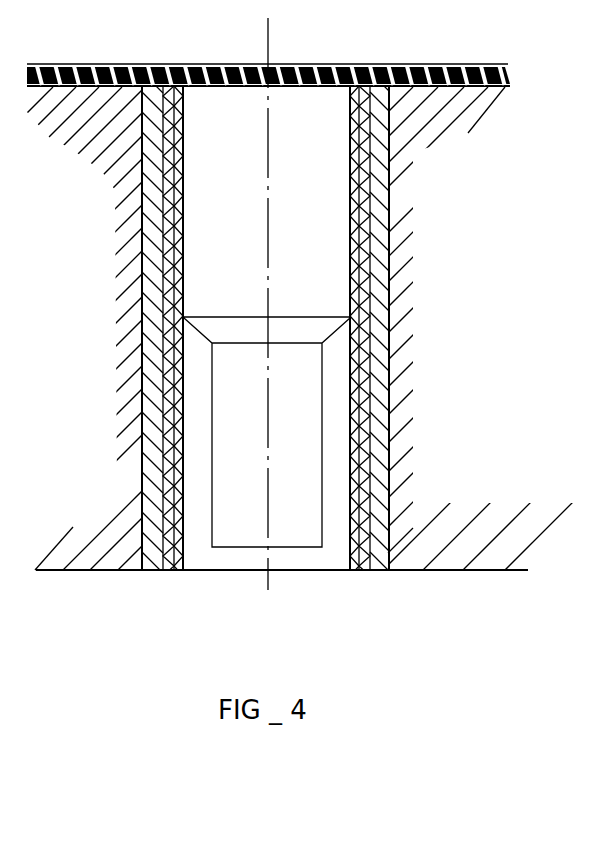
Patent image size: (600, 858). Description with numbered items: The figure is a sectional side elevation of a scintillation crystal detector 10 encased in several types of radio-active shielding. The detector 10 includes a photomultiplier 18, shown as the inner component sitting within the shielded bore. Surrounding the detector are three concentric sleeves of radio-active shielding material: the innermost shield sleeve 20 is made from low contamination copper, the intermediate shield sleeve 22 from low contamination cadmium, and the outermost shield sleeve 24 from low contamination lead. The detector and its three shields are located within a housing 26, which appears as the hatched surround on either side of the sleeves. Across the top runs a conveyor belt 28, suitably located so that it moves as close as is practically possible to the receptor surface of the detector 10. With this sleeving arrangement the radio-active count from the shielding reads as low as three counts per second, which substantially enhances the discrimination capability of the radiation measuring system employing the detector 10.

The scintillation crystal detector 10 is at (228, 186).
The photomultiplier 18 is at (306, 436).
The shield sleeve 20 is at (360, 160).
The shield sleeve 22 is at (362, 212).
The shield sleeve 24 is at (375, 295).
The housing 26 is at (477, 437).
The conveyor belt 28 is at (440, 66).